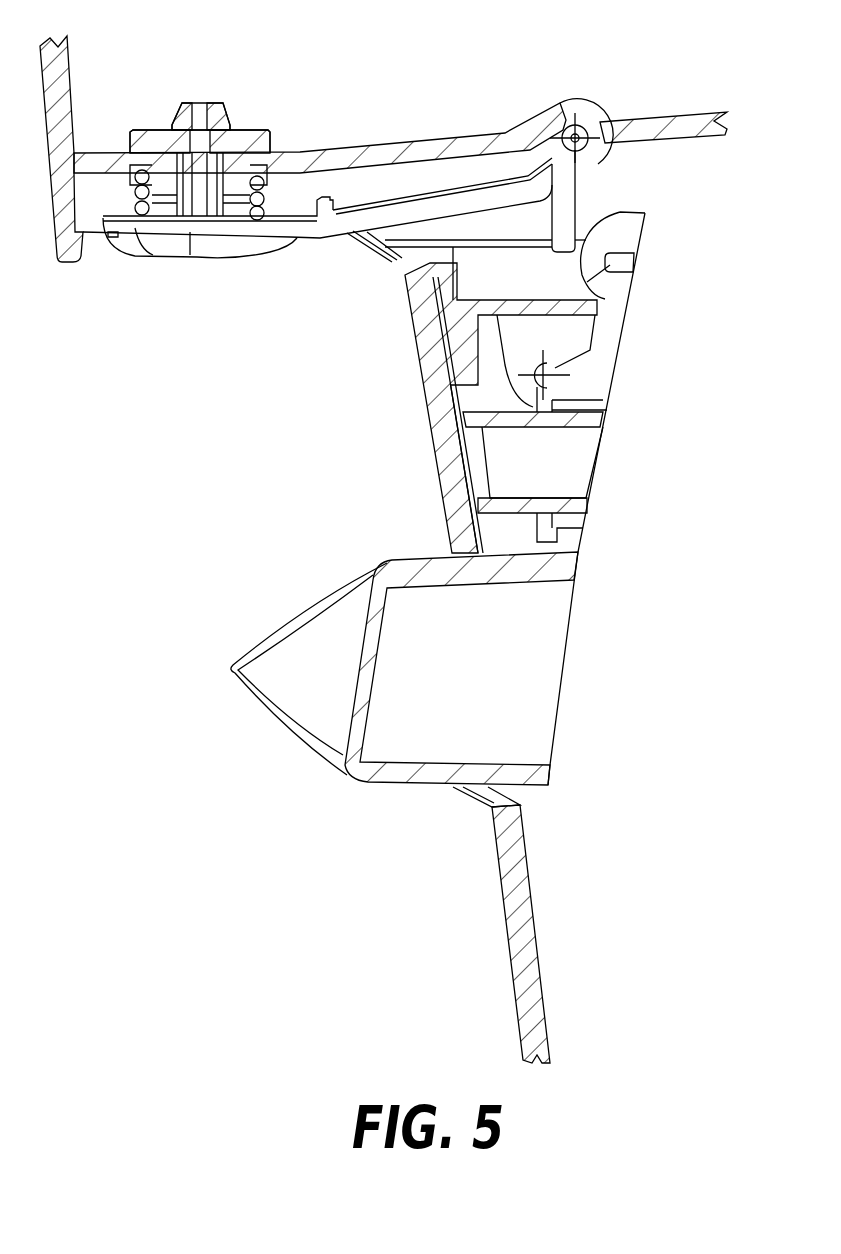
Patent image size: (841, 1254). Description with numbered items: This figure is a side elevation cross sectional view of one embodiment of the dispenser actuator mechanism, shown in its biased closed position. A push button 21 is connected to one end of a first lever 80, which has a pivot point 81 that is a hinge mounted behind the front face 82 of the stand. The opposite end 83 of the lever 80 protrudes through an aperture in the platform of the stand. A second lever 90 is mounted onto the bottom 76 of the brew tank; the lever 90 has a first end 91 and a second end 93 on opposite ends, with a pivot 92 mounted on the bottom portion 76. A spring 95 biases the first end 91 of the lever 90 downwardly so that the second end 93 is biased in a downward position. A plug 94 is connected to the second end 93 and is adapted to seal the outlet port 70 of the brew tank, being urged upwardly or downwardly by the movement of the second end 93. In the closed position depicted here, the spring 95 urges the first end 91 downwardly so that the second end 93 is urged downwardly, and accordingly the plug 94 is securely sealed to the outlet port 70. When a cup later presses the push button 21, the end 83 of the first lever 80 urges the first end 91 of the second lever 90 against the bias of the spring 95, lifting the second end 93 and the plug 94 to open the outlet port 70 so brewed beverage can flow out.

The push button 21 is at (327, 682).
The outlet port 70 is at (170, 165).
The bottom of the brew tank 76 is at (668, 120).
The lever 80 is at (597, 385).
The pivot point 81 is at (530, 377).
The front face 82 is at (443, 393).
The opposite end 83 is at (598, 252).
The second lever 90 is at (428, 205).
The first end 91 is at (565, 198).
The pivot 92 is at (575, 108).
The second end 93 is at (200, 233).
The plug 94 is at (250, 143).
The spring 95 is at (262, 196).